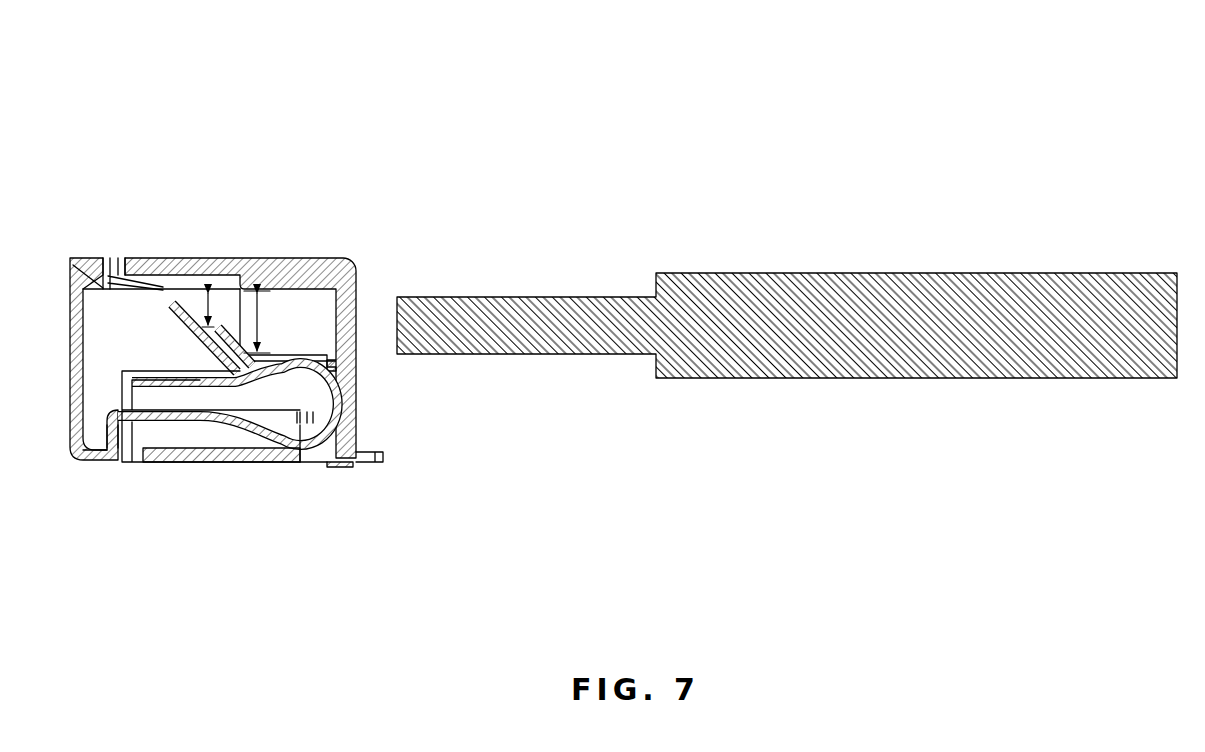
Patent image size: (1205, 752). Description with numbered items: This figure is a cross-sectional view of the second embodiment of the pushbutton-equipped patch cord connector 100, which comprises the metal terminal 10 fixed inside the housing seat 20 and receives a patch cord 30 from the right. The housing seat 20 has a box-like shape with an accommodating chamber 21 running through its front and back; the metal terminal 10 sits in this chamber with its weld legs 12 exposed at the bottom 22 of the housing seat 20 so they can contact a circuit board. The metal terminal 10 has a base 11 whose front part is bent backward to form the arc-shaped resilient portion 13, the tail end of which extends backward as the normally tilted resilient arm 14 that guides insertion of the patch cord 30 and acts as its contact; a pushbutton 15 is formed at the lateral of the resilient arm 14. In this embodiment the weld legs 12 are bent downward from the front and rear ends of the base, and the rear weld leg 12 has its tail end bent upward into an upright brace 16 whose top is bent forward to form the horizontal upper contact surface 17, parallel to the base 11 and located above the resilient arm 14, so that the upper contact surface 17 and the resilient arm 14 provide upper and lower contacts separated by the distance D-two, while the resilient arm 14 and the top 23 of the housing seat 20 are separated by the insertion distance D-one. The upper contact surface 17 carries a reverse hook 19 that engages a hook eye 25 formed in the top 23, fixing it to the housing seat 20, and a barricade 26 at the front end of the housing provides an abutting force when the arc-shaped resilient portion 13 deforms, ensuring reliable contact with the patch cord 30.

The pushbutton-equipped patch cord connector 100 is at (436, 100).
The housing seat 20 is at (403, 133).
The accommodating chamber 21 is at (267, 259).
The bottom 22 is at (330, 259).
The top 23 is at (150, 259).
The hook eye 25 is at (115, 262).
The barricade 26 is at (357, 382).
The reverse hook 19 is at (130, 402).
The metal terminal 10 is at (408, 548).
The base 11 is at (239, 390).
The weld legs 12 is at (111, 461).
The arc-shaped resilient portion 13 is at (322, 462).
The resilient arm 14 is at (266, 418).
The pushbutton 15 is at (212, 405).
The upright brace 16 is at (80, 459).
The upper contact surface 17 is at (160, 276).
The patch cord 30 is at (858, 320).